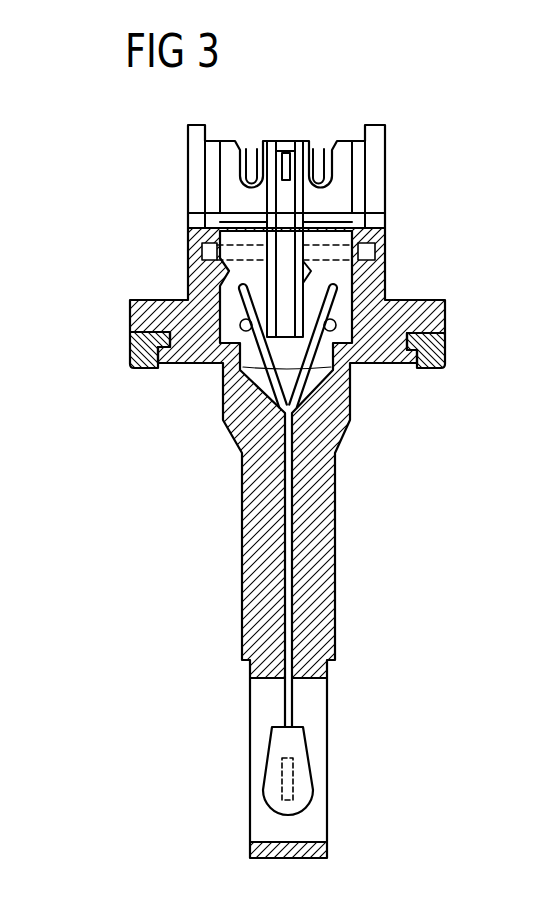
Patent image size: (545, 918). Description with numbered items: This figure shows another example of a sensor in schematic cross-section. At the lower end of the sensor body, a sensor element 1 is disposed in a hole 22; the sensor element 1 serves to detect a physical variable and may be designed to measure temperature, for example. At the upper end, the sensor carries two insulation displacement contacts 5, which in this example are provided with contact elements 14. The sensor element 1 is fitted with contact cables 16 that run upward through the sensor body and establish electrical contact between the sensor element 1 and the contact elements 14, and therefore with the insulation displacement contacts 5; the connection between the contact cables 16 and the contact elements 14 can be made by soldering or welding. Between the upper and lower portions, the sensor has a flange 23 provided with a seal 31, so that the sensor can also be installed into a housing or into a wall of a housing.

The sensor element 1 is at (290, 786).
The insulation displacement contacts 5 is at (321, 112).
The contact elements 14 is at (230, 296).
The contact cables 16 is at (268, 373).
The hole 22 is at (258, 747).
The flange 23 is at (437, 312).
The seal 31 is at (132, 357).